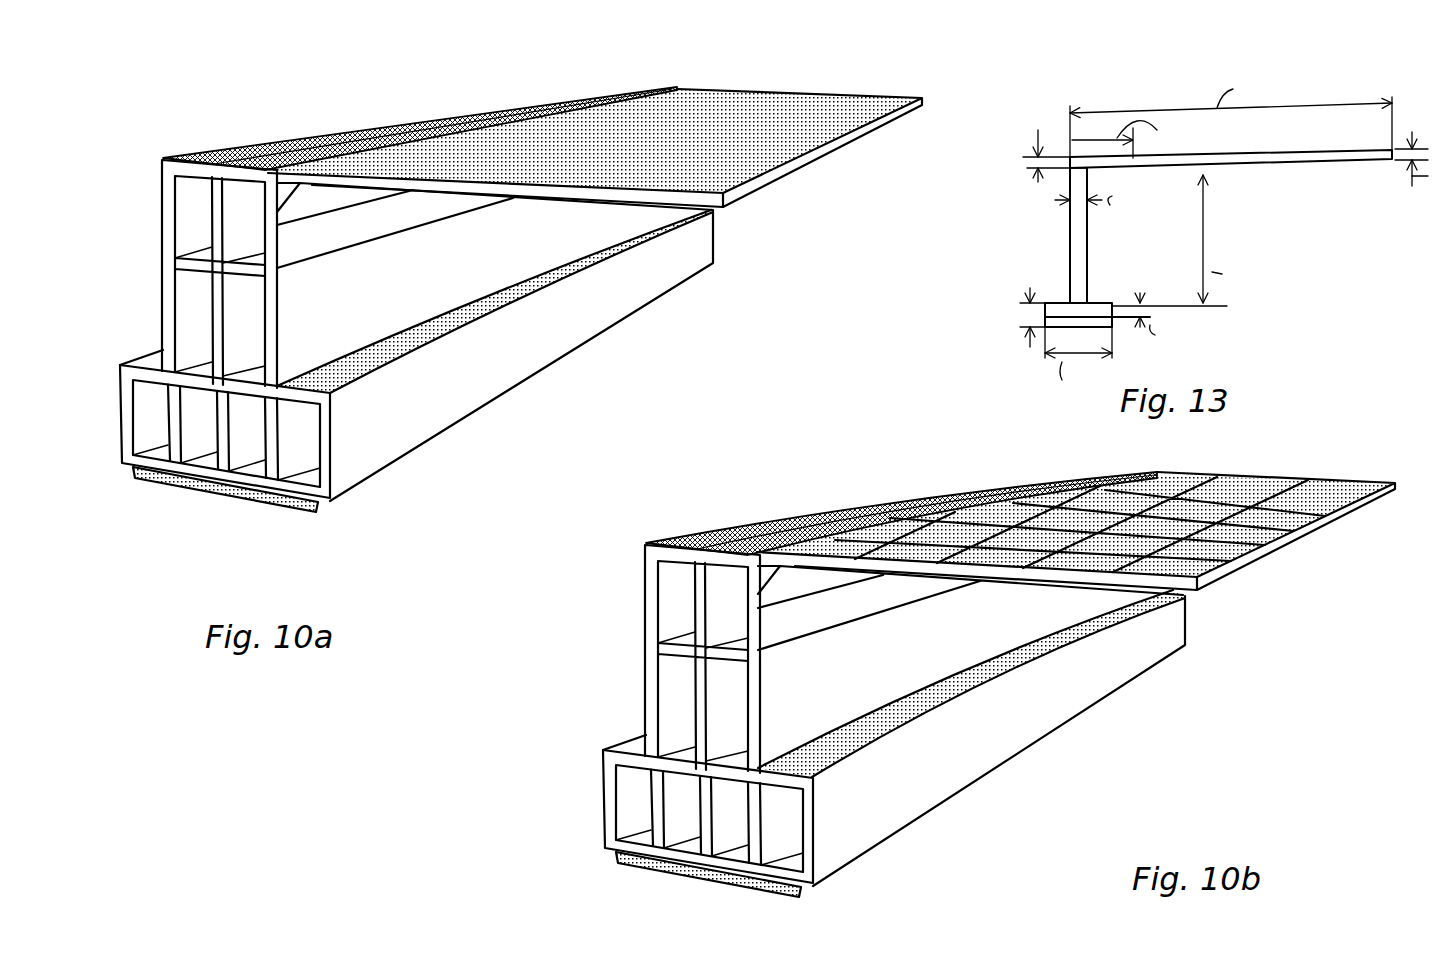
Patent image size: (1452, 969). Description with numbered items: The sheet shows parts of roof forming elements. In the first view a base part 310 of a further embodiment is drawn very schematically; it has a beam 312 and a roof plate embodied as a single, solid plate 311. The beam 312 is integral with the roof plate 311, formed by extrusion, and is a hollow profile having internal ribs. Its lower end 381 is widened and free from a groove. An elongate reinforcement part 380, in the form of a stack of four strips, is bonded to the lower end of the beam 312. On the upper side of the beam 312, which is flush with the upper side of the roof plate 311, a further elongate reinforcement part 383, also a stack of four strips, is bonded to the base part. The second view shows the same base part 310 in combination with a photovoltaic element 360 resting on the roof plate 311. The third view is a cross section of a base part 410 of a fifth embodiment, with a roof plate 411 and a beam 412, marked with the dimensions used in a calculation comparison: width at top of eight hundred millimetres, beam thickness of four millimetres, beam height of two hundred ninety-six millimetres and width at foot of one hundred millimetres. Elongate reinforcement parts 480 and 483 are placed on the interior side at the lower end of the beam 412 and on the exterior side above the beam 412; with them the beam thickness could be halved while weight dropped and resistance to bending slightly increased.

In FIG. 10A, the base part 310 is at (501, 325).
In FIG. 10B, the base part 310 is at (999, 653).
In FIG. 10A, the roof plate 311 is at (830, 188).
In FIG. 10B, the roof plate 311 is at (1294, 573).
In FIG. 10A, the beam 312 is at (543, 424).
In FIG. 10B, the photovoltaic element 360 is at (1250, 462).
In FIG. 10A, the elongate reinforcement part 380 is at (293, 509).
In FIG. 10A, the lower end 381 is at (105, 378).
In FIG. 10A, the further elongate reinforcement part 383 is at (229, 157).
In FIG. 13, the base part 410 is at (1223, 237).
In FIG. 13, the roof plate 411 is at (1266, 188).
In FIG. 13, the beam 412 is at (1118, 241).
In FIG. 13, the elongate reinforcement part 480 is at (1118, 326).
In FIG. 13, the elongate reinforcement part 483 is at (1152, 156).